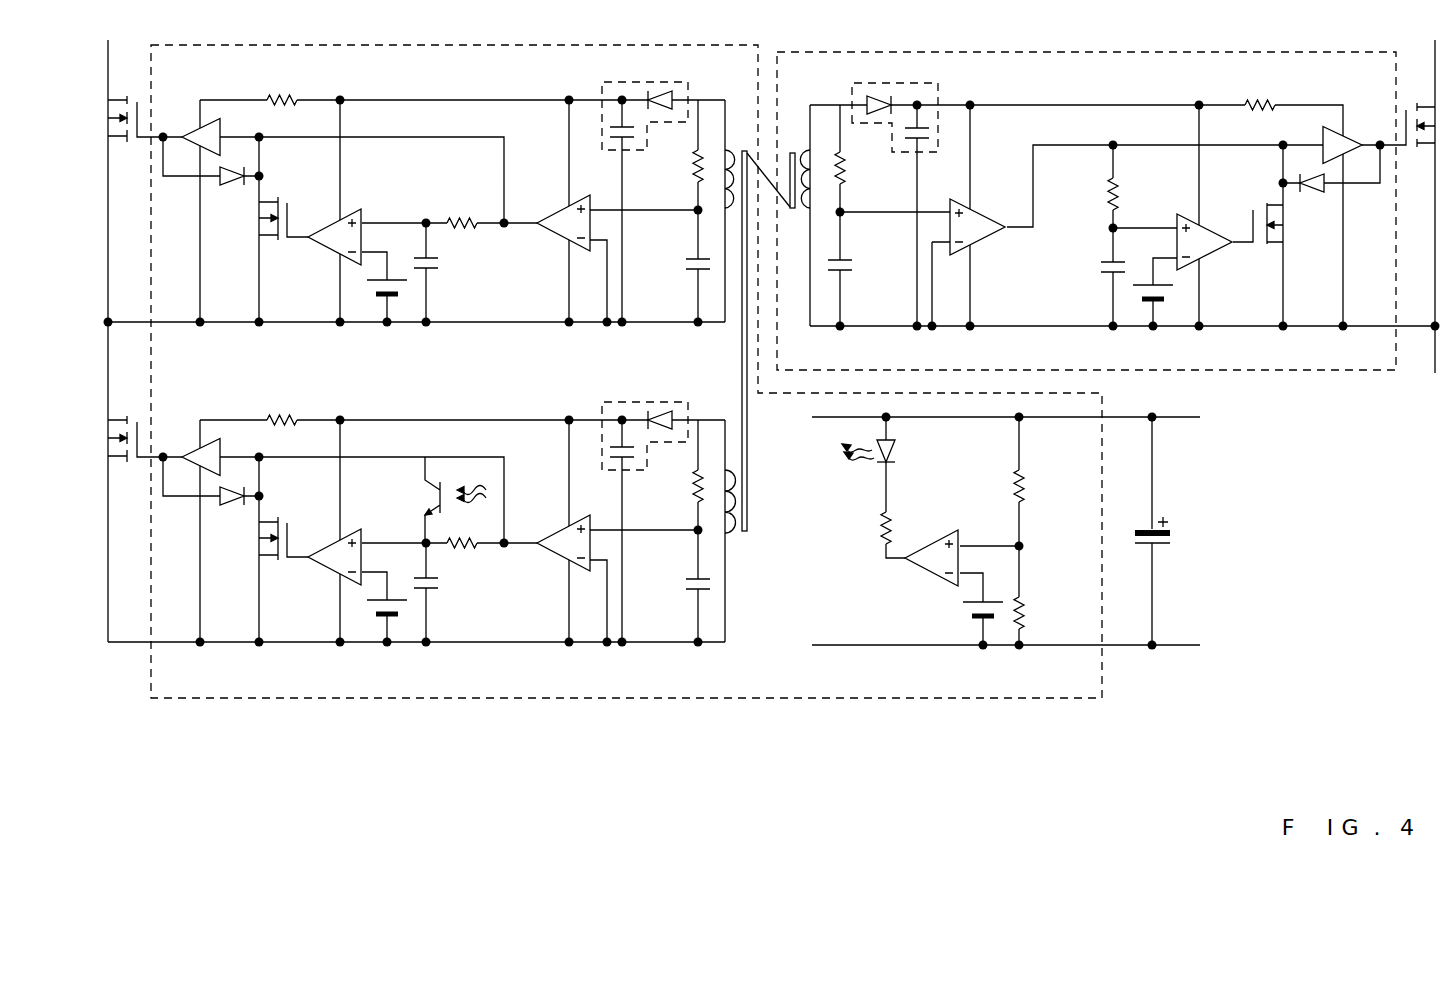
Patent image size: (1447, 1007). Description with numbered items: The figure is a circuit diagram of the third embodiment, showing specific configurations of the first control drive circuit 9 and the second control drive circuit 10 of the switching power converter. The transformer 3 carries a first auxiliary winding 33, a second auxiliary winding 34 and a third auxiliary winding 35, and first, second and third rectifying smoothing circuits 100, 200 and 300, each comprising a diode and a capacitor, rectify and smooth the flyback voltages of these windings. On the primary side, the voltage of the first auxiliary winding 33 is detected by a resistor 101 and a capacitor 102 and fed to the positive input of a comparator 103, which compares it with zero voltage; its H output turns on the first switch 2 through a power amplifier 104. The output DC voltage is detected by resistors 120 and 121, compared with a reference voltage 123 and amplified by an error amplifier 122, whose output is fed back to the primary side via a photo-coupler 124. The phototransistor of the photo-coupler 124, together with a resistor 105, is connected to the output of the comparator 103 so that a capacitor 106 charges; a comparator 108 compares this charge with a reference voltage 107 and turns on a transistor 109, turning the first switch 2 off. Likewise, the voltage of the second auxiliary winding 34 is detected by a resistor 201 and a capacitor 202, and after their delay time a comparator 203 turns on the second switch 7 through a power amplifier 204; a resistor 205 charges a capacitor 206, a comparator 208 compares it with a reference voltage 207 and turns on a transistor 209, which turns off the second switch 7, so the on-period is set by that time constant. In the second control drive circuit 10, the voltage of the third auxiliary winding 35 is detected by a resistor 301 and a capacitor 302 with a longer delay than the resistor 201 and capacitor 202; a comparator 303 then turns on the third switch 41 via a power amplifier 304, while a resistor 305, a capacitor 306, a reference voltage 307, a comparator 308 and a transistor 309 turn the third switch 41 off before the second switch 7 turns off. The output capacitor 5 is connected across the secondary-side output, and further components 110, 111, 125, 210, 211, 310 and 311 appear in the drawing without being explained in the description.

The first switch 2 is at (131, 416).
The transformer 3 is at (758, 430).
The output capacitor 5 is at (1175, 522).
The second switch 7 is at (131, 96).
The first control drive circuit 9 is at (1102, 690).
The second control drive circuit 10 is at (1355, 372).
The first auxiliary winding 33 is at (725, 500).
The second auxiliary winding 34 is at (725, 180).
The third auxiliary winding 35 is at (812, 185).
The third switch 41 is at (1408, 108).
The first rectifying smoothing circuit 100 is at (612, 405).
The resistor 101 is at (693, 480).
The capacitor 102 is at (690, 582).
The comparator 103 is at (536, 536).
The power amplifier 104 is at (200, 448).
The resistor 105 is at (470, 548).
The capacitor 106 is at (437, 585).
The reference voltage 107 is at (370, 612).
The comparator 108 is at (322, 568).
The transistor 109 is at (262, 533).
The resistor 110 is at (272, 420).
The diode 111 is at (215, 508).
The resistor 120 is at (1027, 478).
The resistor 121 is at (1027, 606).
The error amplifier 122 is at (925, 578).
The reference voltage 123 is at (970, 612).
The photo-coupler 124 is at (425, 492).
The resistor 125 is at (878, 528).
The second rectifying smoothing circuit 200 is at (612, 85).
The resistor 201 is at (693, 160).
The capacitor 202 is at (690, 262).
The comparator 203 is at (536, 218).
The power amplifier 204 is at (200, 128).
The resistor 205 is at (447, 218).
The capacitor 206 is at (437, 265).
The reference voltage 207 is at (370, 292).
The comparator 208 is at (322, 248).
The transistor 209 is at (262, 213).
The resistor 210 is at (272, 100).
The diode 211 is at (215, 188).
The third rectifying smoothing circuit 300 is at (925, 85).
The resistor 301 is at (850, 168).
The capacitor 302 is at (852, 265).
The comparator 303 is at (1002, 222).
The power amplifier 304 is at (1348, 128).
The resistor 305 is at (1120, 192).
The capacitor 306 is at (1100, 268).
The reference voltage 307 is at (1165, 290).
The comparator 308 is at (1222, 252).
The transistor 309 is at (1288, 226).
The resistor 310 is at (1265, 102).
The diode 311 is at (1312, 192).